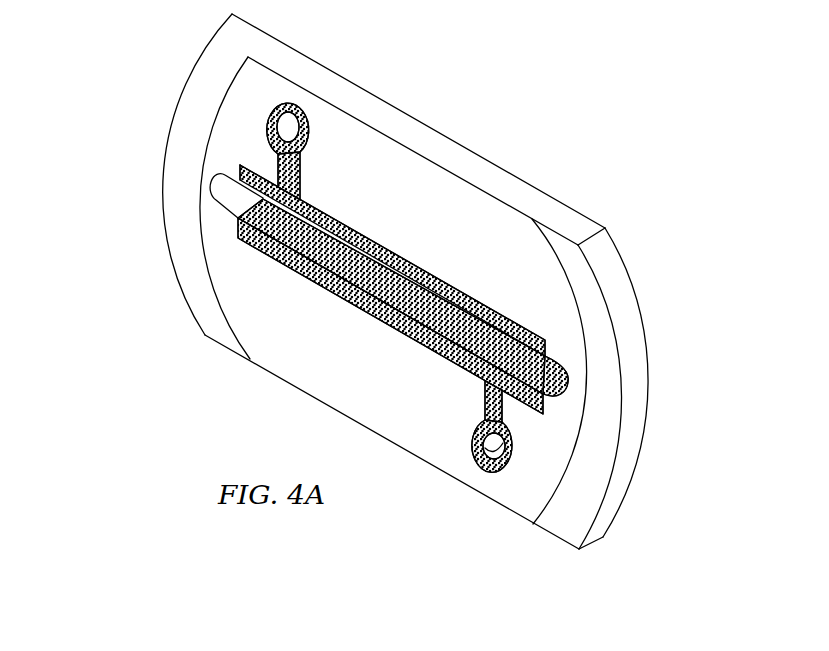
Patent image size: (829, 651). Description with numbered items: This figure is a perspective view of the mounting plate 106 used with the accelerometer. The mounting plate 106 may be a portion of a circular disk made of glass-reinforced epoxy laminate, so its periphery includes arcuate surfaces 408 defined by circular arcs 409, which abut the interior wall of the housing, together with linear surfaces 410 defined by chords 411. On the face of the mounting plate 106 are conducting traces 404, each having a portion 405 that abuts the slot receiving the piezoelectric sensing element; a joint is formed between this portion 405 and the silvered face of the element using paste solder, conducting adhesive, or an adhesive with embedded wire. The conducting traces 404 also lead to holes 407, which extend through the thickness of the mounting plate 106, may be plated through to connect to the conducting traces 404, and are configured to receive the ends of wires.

The mounting plate 106 is at (130, 75).
The conducting traces 404 is at (312, 194).
The portion 405 is at (433, 274).
The holes 407 is at (284, 124).
The arcuate surfaces 408 is at (610, 281).
The circular arcs 409 is at (163, 185).
The linear surfaces 410 is at (386, 118).
The chords 411 is at (472, 178).